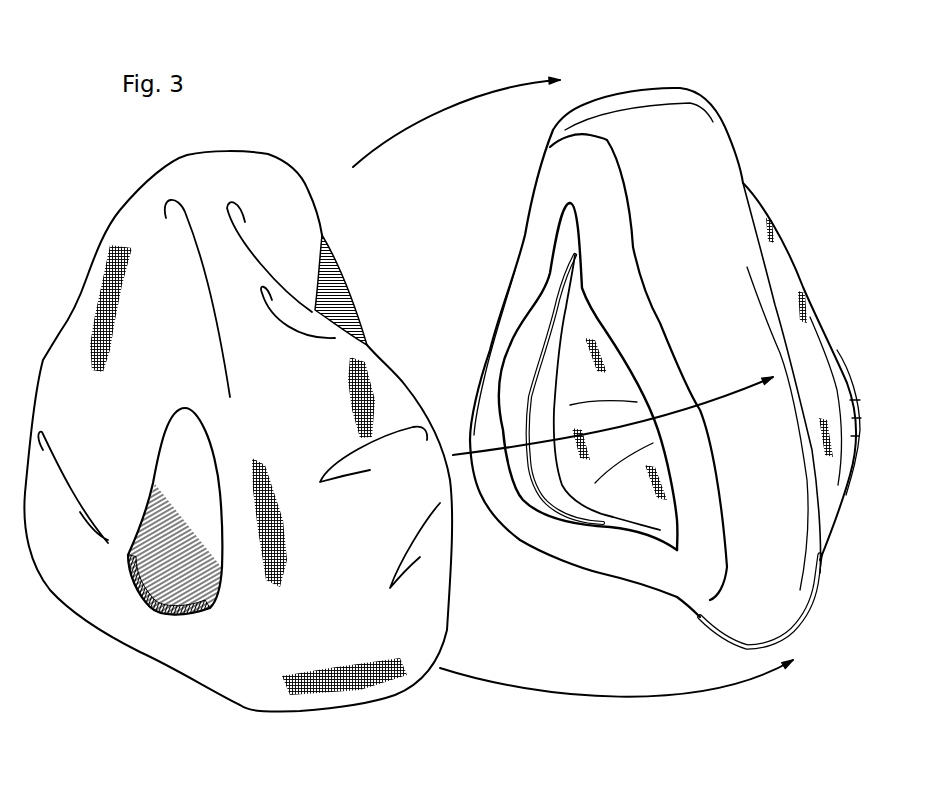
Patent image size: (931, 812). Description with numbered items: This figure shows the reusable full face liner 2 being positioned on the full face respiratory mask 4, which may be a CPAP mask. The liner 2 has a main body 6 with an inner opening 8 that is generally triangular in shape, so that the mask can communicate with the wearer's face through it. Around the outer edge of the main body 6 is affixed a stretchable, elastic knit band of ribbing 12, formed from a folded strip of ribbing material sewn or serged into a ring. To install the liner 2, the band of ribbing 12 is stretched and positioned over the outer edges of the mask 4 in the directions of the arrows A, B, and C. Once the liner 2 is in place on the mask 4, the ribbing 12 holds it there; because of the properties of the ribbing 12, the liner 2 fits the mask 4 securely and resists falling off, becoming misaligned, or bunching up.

The reusable full face liner 2 is at (79, 206).
The respiratory mask 4 is at (713, 177).
The main body 6 is at (210, 677).
The inner opening 8 is at (188, 491).
The band of ribbing 12 is at (338, 292).
The arrow A is at (458, 102).
The arrow B is at (730, 400).
The arrow C is at (637, 703).